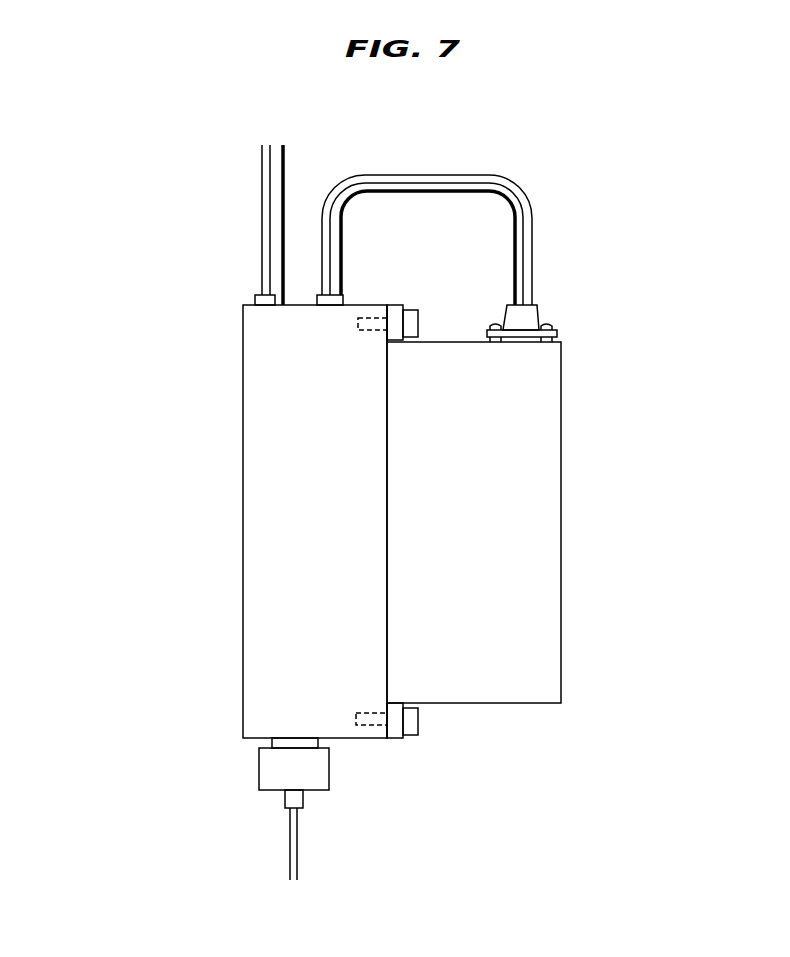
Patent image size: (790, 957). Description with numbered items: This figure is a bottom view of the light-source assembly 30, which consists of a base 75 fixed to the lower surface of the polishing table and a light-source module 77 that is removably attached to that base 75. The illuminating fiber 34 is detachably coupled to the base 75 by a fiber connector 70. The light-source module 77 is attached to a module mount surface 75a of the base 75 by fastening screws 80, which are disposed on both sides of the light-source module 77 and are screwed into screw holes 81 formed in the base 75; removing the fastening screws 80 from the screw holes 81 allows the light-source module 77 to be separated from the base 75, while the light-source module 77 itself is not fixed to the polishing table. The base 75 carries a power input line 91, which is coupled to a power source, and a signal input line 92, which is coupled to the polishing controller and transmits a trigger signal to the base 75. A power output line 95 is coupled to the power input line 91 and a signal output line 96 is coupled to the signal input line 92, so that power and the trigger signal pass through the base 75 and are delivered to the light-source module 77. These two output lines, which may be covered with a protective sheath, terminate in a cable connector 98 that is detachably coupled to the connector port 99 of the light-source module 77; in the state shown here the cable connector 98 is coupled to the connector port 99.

The light-source assembly 30 is at (250, 519).
The illuminating fiber 34 is at (290, 845).
The fiber connector 70 is at (259, 770).
The base 75 is at (243, 475).
The module mount surface 75a is at (387, 530).
The light-source module 77 is at (561, 505).
The fastening screws 80 is at (420, 322).
The screw holes 81 is at (370, 318).
The power input line 91 is at (262, 212).
The signal input line 92 is at (285, 180).
The power output line 95 is at (424, 205).
The signal output line 96 is at (437, 195).
The cable connector 98 is at (544, 336).
The connector port 99 is at (518, 337).